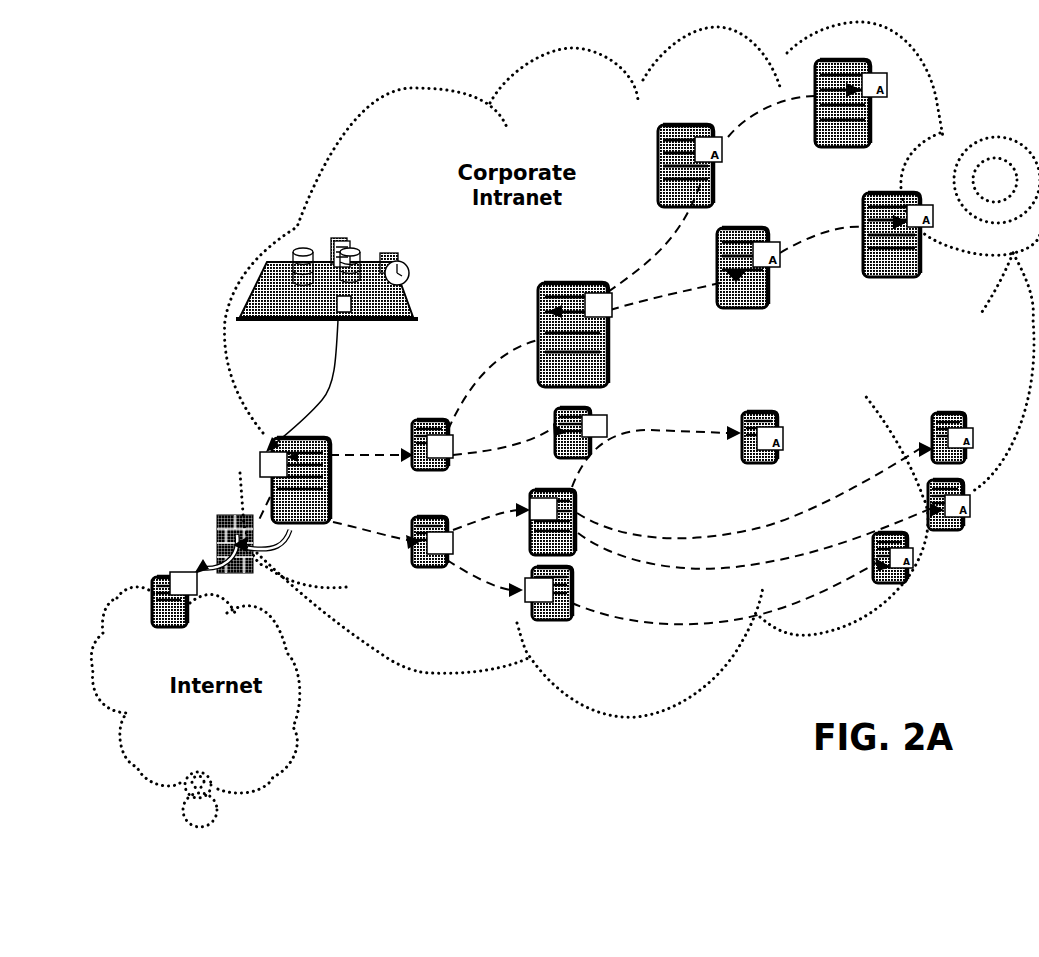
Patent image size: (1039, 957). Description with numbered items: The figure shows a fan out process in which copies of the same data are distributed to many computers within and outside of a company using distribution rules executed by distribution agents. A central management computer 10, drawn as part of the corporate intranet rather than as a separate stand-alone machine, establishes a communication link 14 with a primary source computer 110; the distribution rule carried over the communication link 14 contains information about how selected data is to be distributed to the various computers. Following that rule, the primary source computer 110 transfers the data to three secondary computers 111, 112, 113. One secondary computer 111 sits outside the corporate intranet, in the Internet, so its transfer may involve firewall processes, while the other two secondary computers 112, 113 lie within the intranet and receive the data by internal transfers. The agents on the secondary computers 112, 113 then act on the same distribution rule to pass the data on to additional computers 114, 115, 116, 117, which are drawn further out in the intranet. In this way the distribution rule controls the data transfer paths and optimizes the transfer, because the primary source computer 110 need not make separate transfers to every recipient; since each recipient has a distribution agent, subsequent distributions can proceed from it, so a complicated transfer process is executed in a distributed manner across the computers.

The central management computer 10 is at (258, 280).
The communication link 14 is at (326, 373).
The primary source computer 110 is at (330, 438).
The secondary computer 111 is at (155, 588).
The secondary computer 112 is at (421, 420).
The secondary computer 113 is at (420, 568).
The additional computer 114 is at (607, 335).
The additional computer 115 is at (588, 408).
The additional computer 116 is at (578, 500).
The additional computer 117 is at (562, 618).